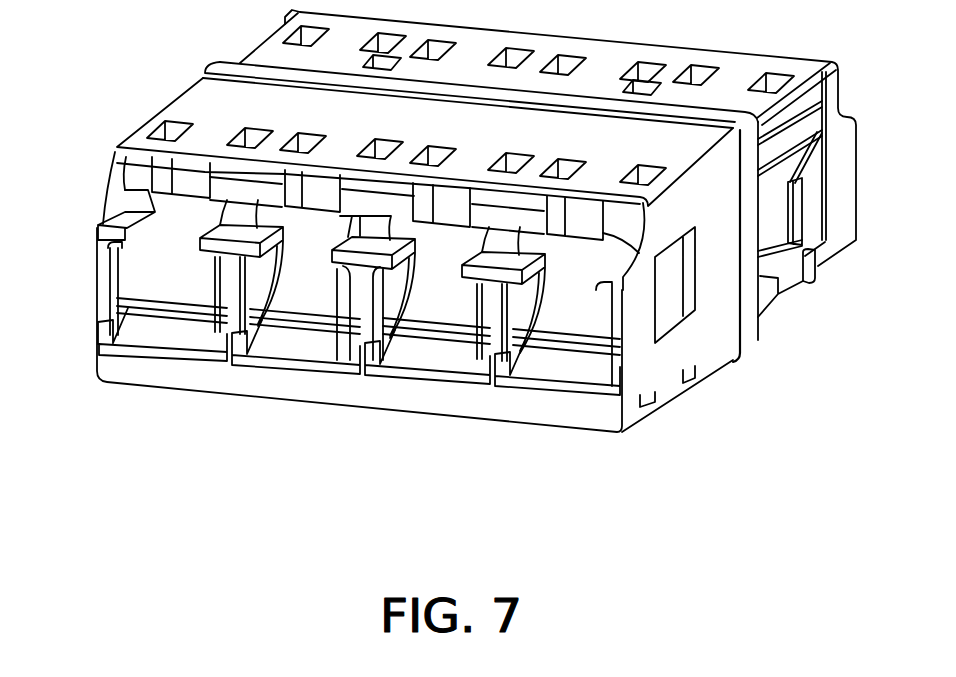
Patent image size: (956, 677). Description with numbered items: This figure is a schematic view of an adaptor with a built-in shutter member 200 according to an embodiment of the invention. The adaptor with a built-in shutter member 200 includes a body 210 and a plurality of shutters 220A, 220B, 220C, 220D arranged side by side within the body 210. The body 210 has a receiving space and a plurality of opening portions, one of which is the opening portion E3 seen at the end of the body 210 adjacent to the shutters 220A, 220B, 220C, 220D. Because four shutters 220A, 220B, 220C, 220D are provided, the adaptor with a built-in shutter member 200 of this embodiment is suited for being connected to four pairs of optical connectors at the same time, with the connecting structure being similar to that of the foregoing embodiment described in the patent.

The adaptor with a built-in shutter member 200 is at (821, 523).
The body 210 is at (193, 107).
The opening portion E3 is at (125, 277).
The shutter 220A is at (180, 300).
The shutter 220B is at (313, 313).
The shutter 220C is at (447, 317).
The shutter 220D is at (573, 327).